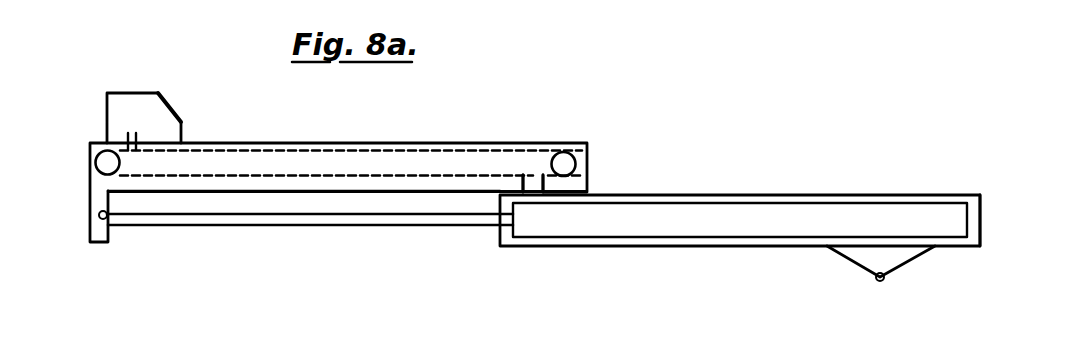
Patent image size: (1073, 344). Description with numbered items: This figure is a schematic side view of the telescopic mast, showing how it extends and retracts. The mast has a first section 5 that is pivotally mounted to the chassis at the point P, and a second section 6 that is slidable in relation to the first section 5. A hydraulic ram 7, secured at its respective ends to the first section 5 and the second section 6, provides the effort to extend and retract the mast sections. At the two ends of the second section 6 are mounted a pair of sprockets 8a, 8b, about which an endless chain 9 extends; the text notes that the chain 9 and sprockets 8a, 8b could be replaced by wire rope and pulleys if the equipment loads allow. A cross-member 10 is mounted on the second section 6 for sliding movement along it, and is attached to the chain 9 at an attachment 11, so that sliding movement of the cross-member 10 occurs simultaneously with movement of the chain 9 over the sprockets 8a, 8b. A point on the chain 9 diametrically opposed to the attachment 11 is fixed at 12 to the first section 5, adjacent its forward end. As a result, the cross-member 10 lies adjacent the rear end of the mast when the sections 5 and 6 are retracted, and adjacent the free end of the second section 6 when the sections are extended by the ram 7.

The first section 5 is at (982, 225).
The second section 6 is at (432, 143).
The hydraulic ram 7 is at (717, 199).
The sprocket 8a is at (92, 166).
The sprocket 8b is at (588, 160).
The endless chain 9 is at (321, 153).
The cross-member 10 is at (185, 122).
The attachment 11 is at (128, 135).
The fixing point 12 is at (522, 174).
The pivot point P is at (888, 277).